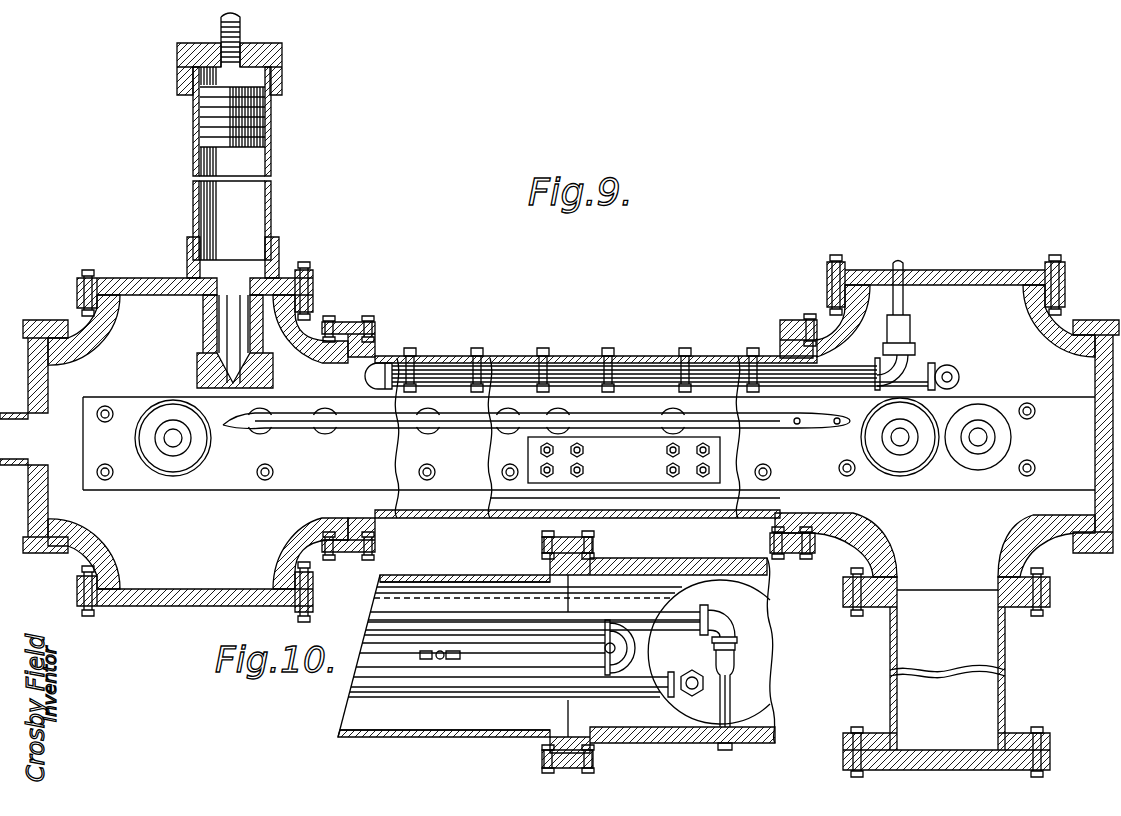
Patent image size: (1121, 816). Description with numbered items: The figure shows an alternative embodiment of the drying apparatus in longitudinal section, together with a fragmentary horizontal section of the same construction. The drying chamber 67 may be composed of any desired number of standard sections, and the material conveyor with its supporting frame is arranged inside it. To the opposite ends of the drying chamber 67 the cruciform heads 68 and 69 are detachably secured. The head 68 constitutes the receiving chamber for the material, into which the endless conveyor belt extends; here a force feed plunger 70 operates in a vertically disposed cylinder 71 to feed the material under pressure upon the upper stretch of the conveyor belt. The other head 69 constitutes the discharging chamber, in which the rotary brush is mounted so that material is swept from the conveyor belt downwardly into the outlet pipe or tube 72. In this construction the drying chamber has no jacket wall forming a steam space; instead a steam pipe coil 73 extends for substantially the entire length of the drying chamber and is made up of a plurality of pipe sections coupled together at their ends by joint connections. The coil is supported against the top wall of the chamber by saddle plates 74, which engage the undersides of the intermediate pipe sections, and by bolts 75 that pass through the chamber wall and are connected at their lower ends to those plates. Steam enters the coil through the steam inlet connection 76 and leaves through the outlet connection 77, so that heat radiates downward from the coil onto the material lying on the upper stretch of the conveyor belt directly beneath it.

In FIG. 9, the drying chamber 67 is at (441, 503).
In FIG. 10, the drying chamber 67 is at (468, 728).
In FIG. 9, the cruciform head 68 is at (303, 323).
In FIG. 9, the cruciform head 69 is at (990, 277).
In FIG. 9, the force feed plunger 70 is at (210, 136).
In FIG. 9, the cylinder 71 is at (272, 208).
In FIG. 9, the outlet pipe 72 is at (1006, 645).
In FIG. 9, the steam pipe coil 73 is at (507, 367).
In FIG. 10, the steam pipe coil 73 is at (503, 670).
In FIG. 9, the saddle plates 74 is at (550, 383).
In FIG. 10, the saddle plates 74 is at (428, 658).
In FIG. 9, the bolts 75 is at (682, 353).
In FIG. 10, the bolts 75 is at (440, 662).
In FIG. 9, the steam inlet connection 76 is at (903, 263).
In FIG. 10, the steam inlet connection 76 is at (683, 688).
In FIG. 9, the outlet connection 77 is at (958, 368).
In FIG. 10, the outlet connection 77 is at (732, 695).